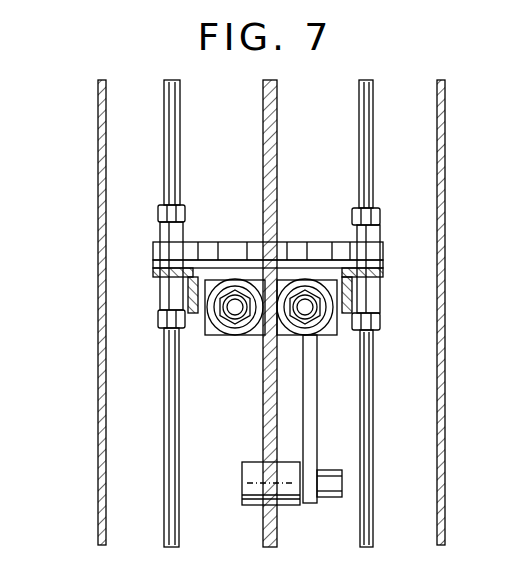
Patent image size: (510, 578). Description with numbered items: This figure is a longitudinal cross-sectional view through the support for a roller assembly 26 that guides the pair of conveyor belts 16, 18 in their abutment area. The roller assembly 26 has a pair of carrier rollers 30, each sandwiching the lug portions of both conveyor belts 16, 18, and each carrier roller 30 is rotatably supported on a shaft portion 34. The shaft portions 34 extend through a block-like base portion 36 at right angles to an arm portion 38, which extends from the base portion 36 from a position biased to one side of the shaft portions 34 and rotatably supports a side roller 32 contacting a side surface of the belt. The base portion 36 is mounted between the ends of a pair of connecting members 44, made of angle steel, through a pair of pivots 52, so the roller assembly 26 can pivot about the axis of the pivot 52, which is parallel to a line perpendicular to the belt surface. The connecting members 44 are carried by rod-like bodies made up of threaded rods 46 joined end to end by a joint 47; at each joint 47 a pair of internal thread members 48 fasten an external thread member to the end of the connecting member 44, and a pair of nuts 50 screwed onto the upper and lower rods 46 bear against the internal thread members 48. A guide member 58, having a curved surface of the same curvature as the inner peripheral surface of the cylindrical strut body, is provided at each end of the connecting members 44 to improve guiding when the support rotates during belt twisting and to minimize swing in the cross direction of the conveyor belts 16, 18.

The conveyor belt 16 is at (98, 158).
The conveyor belt 18 is at (277, 124).
The roller assembly 26 is at (322, 423).
The carrier roller 30 is at (262, 336).
The side roller 32 is at (285, 503).
The shaft portion 34 is at (304, 296).
The base portion 36 is at (214, 330).
The arm portion 38 is at (310, 447).
The connecting member 44 is at (166, 286).
The rod 46 is at (170, 131).
The joint 47 is at (348, 218).
The internal thread member 48 is at (380, 226).
The nut 50 is at (380, 214).
The pivot 52 is at (340, 328).
The guide member 58 is at (232, 244).